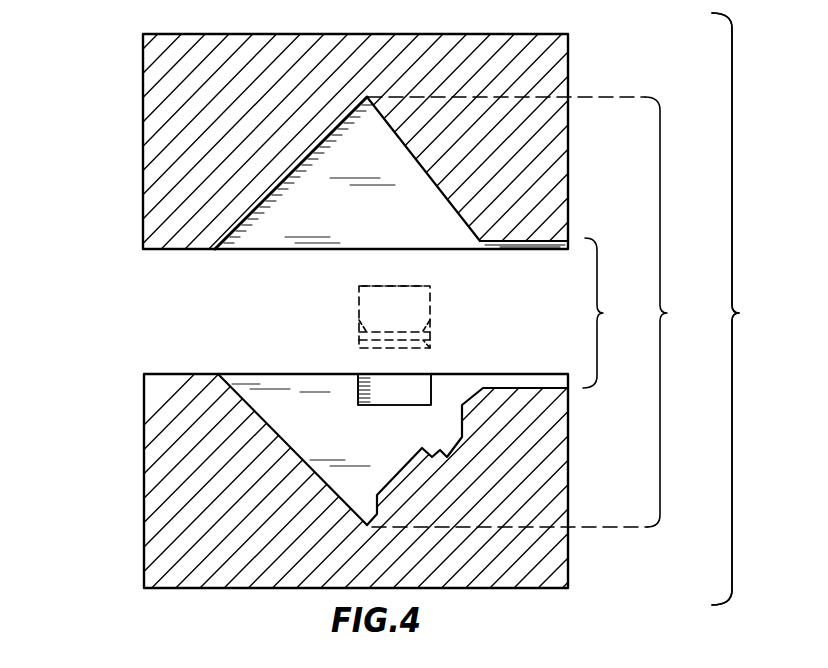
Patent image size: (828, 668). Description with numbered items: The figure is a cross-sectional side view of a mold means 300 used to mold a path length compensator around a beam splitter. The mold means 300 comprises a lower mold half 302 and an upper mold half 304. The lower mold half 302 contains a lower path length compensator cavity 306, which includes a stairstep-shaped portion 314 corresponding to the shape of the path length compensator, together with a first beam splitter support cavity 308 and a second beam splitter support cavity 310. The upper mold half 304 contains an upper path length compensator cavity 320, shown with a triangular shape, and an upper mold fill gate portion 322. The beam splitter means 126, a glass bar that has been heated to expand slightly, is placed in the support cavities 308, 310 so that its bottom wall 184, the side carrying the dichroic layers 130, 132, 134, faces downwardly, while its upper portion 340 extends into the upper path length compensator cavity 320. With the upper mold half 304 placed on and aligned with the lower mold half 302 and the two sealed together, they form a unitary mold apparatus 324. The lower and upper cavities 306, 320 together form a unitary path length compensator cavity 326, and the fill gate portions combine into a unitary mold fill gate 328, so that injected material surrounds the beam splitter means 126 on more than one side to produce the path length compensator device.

The upper mold half 304 is at (128, 122).
The lower mold half 302 is at (128, 434).
The upper path length compensator cavity 320 is at (262, 240).
The upper mold fill gate portion 322 is at (540, 250).
The lower path length compensator cavity 306 is at (287, 387).
The first beam splitter support cavity 308 is at (358, 405).
The second beam splitter support cavity 310 is at (394, 389).
The stairstep-shaped portion 314 is at (455, 438).
The beam splitter means 126 is at (437, 290).
The upper portion of the beam splitter means 340 is at (373, 288).
The dichroic layer 132 is at (357, 322).
The dichroic layer 134 is at (430, 318).
The bottom wall of the beam splitter means 184 is at (360, 346).
The dichroic layer 130 is at (430, 347).
The unitary mold fill gate 328 is at (616, 313).
The unitary path length compensator cavity 326 is at (542, 312).
The mold means 300 is at (753, 309).
The unitary mold apparatus 324 is at (725, 309).